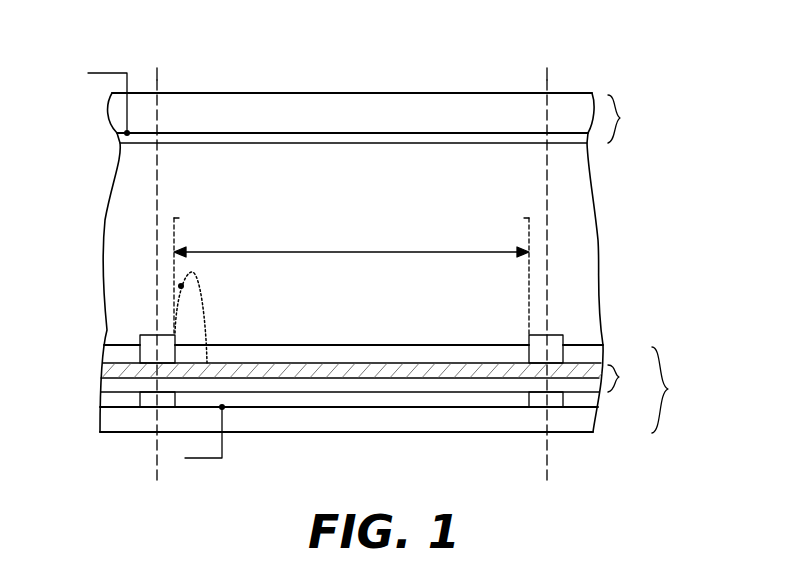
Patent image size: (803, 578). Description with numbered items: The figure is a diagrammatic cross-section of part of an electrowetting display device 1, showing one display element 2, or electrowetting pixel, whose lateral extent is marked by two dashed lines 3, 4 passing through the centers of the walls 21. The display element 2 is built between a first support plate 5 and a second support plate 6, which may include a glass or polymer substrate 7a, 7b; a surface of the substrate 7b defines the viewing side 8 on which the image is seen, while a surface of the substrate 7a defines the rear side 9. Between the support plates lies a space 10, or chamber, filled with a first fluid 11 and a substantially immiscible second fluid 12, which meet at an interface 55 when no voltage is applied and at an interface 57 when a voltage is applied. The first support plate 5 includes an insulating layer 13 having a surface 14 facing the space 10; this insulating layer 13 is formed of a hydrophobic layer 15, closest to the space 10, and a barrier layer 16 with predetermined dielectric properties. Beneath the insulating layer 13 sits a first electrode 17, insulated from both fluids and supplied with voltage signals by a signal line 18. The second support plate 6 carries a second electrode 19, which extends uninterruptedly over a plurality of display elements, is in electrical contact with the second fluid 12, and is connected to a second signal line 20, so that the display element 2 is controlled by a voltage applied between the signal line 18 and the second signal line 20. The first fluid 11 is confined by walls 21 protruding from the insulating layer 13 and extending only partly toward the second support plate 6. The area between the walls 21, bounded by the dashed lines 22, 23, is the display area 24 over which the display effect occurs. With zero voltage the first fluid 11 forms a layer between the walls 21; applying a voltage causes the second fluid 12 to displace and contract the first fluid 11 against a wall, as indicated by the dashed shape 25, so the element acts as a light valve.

The electrowetting display device 1 is at (663, 65).
The display element 2 is at (350, 53).
The dashed line 3 is at (158, 75).
The dashed line 4 is at (548, 75).
The first support plate 5 is at (668, 390).
The second support plate 6 is at (625, 119).
The substrate 7a is at (575, 432).
The substrate 7b is at (493, 108).
The viewing side 8 is at (250, 93).
The rear side 9 is at (312, 432).
The space 10 is at (418, 160).
The first fluid 11 is at (495, 352).
The second fluid 12 is at (594, 222).
The insulating layer 13 is at (374, 376).
The surface 14 is at (397, 362).
The layer 15 is at (350, 372).
The barrier layer 16 is at (300, 385).
The first electrode 17 is at (418, 398).
The signal line 18 is at (203, 462).
The second electrode 19 is at (146, 138).
The second signal line 20 is at (103, 73).
The walls 21 is at (150, 347).
The dashed line 22 is at (523, 222).
The dashed line 23 is at (180, 222).
The display area 24 is at (351, 243).
The dashed shape 25 is at (182, 286).
The interface 55 is at (445, 345).
The interface 57 is at (207, 312).